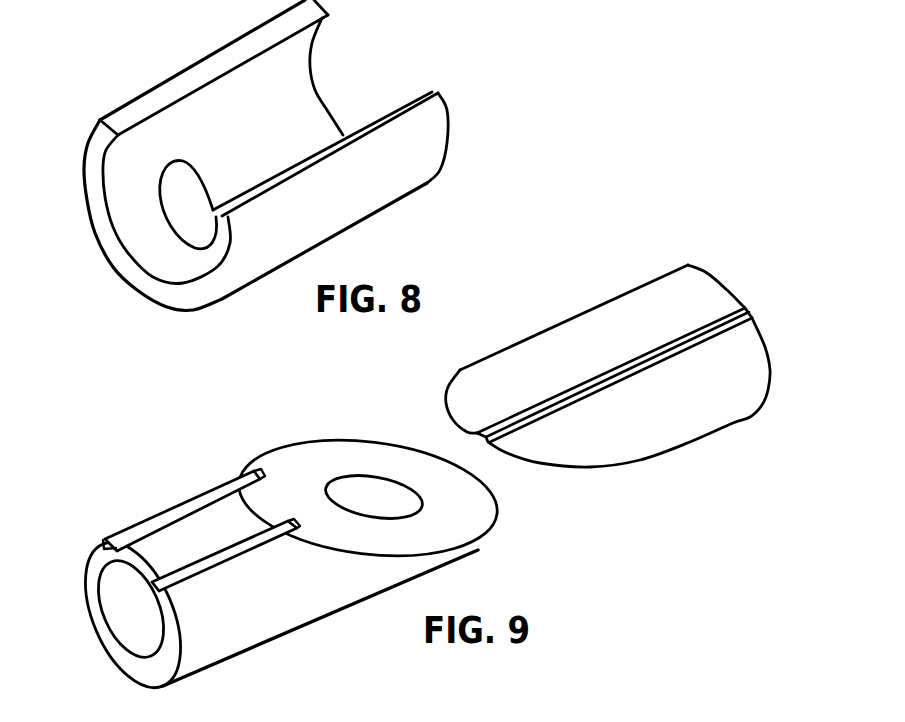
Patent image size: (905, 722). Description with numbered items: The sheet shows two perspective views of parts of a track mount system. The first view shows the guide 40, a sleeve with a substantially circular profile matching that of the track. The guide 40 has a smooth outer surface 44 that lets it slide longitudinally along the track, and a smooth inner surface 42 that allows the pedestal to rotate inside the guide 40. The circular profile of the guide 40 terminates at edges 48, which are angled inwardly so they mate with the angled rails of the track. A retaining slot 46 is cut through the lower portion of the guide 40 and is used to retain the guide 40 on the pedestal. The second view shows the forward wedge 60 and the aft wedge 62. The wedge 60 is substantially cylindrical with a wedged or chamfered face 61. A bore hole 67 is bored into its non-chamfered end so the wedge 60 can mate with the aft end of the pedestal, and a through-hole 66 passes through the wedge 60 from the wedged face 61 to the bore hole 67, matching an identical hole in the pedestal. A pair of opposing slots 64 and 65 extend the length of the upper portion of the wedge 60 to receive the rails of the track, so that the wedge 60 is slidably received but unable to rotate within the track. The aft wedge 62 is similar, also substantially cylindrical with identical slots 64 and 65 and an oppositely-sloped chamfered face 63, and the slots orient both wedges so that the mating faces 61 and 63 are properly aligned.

In FIG. 8, the guide 40 is at (168, 311).
In FIG. 8, the inner surface 42 is at (154, 262).
In FIG. 8, the outer surface 44 is at (86, 198).
In FIG. 8, the retaining slot 46 is at (181, 193).
In FIG. 8, the edges 48 is at (431, 91).
In FIG. 9, the forward wedge 60 is at (202, 636).
In FIG. 9, the wedged or chamfered face 61 is at (486, 508).
In FIG. 9, the aft wedge 62 is at (685, 412).
In FIG. 9, the chamfered face 63 is at (448, 410).
In FIG. 9, the slot 64 is at (246, 473).
In FIG. 9, the slot 65 is at (243, 548).
In FIG. 9, the through-hole 66 is at (373, 495).
In FIG. 9, the bore hole 67 is at (146, 648).